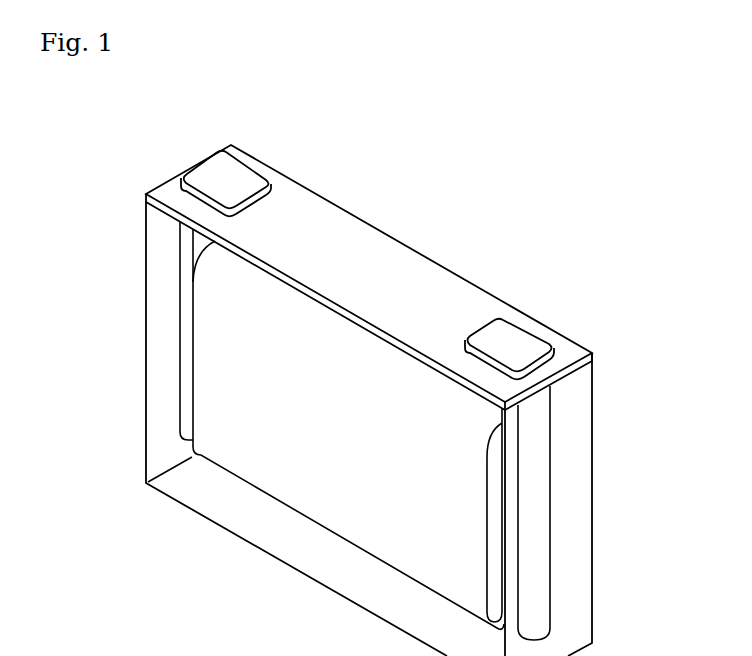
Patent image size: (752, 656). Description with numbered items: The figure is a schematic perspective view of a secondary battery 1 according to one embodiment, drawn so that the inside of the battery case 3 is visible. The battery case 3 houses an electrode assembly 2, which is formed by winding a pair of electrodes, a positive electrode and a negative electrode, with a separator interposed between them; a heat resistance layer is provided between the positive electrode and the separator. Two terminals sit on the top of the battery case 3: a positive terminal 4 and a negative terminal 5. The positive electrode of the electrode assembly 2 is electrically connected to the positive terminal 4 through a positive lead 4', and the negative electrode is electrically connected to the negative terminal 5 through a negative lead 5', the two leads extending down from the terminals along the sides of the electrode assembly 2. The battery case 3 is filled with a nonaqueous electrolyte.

The secondary battery 1 is at (487, 234).
The electrode assembly 2 is at (348, 429).
The battery case 3 is at (145, 292).
The positive terminal 4 is at (226, 157).
The negative terminal 5 is at (509, 321).
The positive lead 4' is at (148, 331).
The negative lead 5' is at (572, 513).